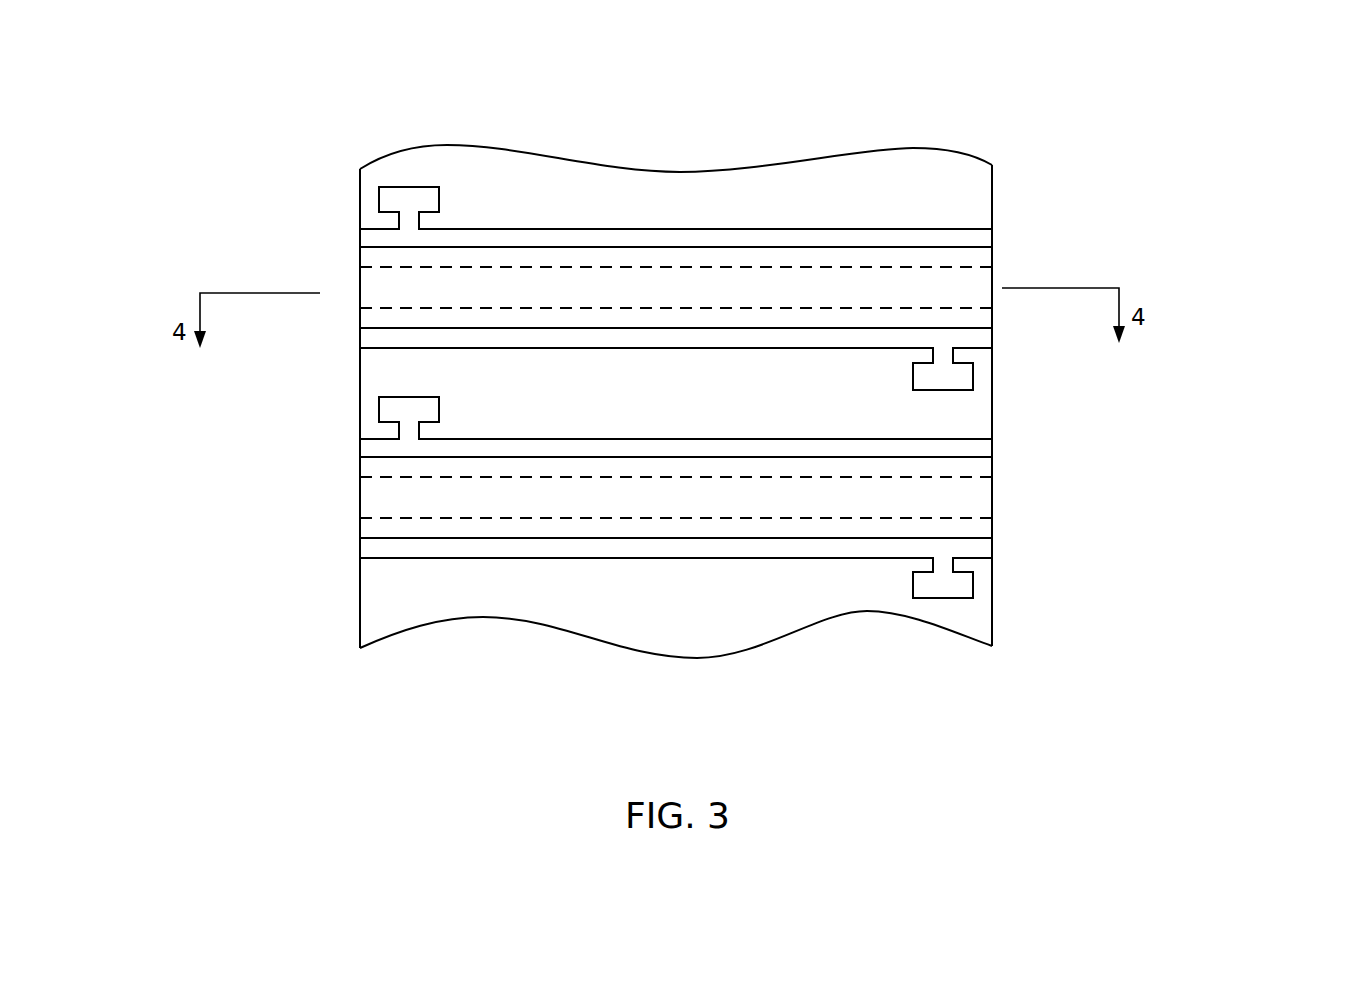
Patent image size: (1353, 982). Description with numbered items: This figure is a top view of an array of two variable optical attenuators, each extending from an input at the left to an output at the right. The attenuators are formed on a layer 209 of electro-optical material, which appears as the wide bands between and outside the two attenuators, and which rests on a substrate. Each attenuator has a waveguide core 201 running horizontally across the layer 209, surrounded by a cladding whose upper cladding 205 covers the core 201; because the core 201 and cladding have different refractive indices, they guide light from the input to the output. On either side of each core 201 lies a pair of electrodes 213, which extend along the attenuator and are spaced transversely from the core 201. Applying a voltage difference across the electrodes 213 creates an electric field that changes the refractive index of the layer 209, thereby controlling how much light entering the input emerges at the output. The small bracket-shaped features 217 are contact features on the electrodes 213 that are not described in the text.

The waveguide core 201 is at (360, 300).
The upper cladding 205 is at (993, 260).
The layer of electro-optical material 209 is at (681, 216).
The pair of electrodes 213 is at (993, 235).
The contact / plug 217 is at (379, 201).